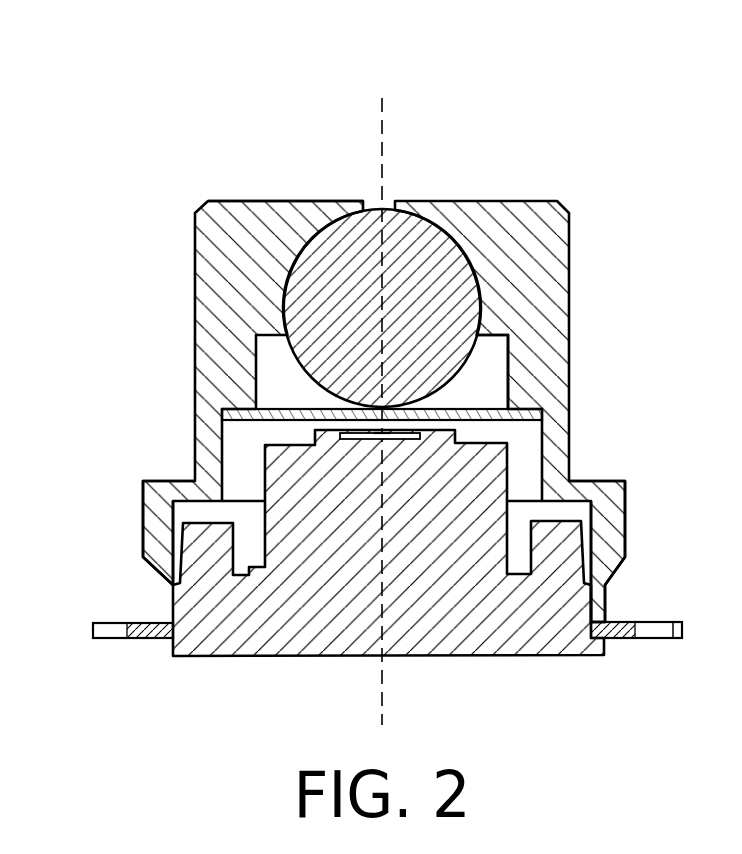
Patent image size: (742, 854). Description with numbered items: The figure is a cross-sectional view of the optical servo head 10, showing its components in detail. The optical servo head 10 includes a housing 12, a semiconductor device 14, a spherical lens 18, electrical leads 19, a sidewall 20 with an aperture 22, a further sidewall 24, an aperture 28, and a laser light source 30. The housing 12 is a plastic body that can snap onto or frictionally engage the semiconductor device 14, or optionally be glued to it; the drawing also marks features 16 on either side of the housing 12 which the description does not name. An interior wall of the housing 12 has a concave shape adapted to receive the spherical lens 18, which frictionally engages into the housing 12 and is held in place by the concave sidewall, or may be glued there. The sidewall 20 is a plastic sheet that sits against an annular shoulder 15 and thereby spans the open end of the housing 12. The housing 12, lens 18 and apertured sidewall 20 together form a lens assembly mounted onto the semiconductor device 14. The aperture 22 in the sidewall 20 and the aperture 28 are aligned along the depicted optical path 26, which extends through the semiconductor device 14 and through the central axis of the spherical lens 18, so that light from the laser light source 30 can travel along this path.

The optical servo head 10 is at (563, 181).
The housing 12 is at (570, 287).
The semiconductor device 14 is at (513, 657).
The annular shoulder 15 is at (237, 409).
The retaining hook 16 is at (142, 527).
The spherical lens 18 is at (312, 283).
The electrical leads 19 is at (657, 622).
The sidewall 20 is at (483, 407).
The aperture 22 is at (394, 440).
The sidewall 24 is at (268, 201).
The optical path 26 is at (383, 108).
The aperture 28 is at (389, 202).
The laser light source 30 is at (387, 445).